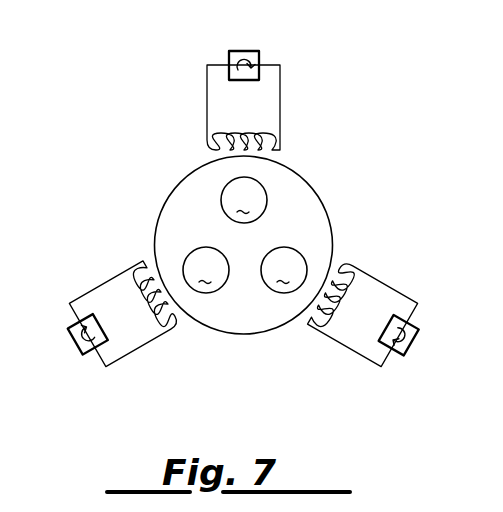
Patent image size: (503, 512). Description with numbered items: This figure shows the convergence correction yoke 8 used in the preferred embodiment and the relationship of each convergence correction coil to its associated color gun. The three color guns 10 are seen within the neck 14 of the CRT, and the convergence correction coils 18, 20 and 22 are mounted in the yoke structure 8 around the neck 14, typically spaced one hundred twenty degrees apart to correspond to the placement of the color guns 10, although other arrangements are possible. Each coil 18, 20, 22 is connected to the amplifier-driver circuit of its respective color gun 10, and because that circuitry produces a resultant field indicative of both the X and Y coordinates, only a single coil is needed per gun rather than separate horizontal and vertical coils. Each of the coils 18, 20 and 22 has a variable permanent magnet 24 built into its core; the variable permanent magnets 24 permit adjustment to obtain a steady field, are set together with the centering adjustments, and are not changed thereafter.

The convergence correction yoke 8 is at (230, 270).
The color gun 10 is at (245, 235).
The neck 14 is at (177, 186).
The convergence correction coil 18 is at (281, 151).
The convergence correction coil 20 is at (143, 263).
The convergence correction coil 22 is at (350, 266).
The variable permanent magnet 24 is at (240, 50).